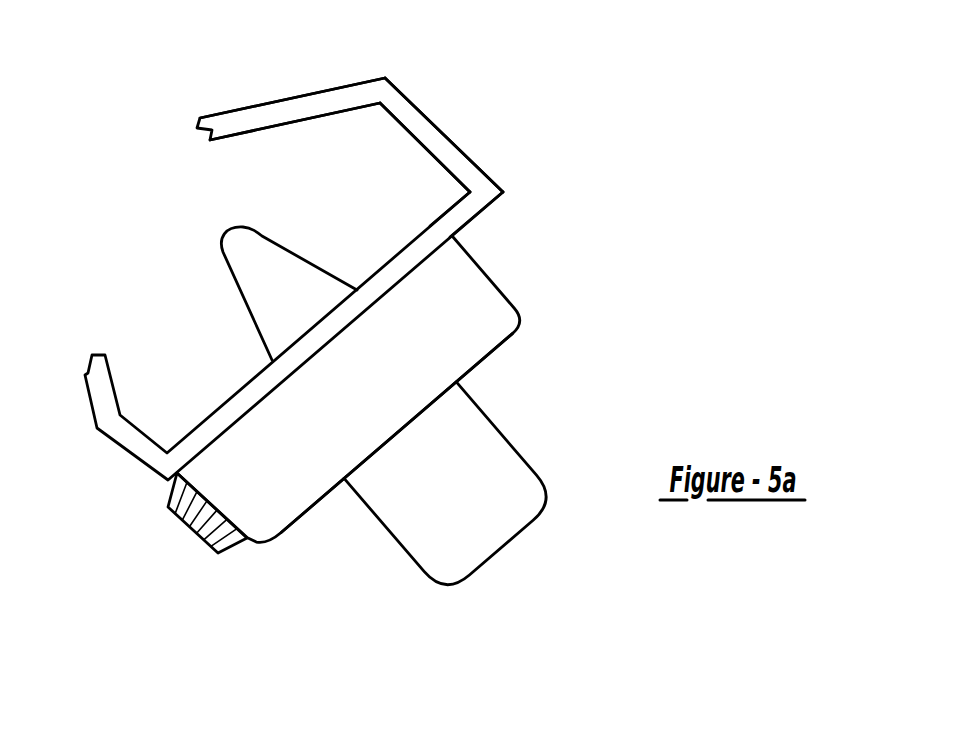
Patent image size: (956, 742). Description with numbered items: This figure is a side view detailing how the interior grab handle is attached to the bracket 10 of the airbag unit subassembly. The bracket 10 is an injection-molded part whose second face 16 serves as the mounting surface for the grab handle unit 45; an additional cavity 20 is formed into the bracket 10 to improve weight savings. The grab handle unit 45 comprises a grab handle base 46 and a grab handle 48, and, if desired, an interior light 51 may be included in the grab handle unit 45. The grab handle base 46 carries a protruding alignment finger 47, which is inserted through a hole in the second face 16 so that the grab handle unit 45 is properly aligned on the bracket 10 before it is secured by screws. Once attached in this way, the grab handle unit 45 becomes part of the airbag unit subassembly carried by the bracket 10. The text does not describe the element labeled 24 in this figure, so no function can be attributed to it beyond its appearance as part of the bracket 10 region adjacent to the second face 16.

The bracket 10 is at (457, 117).
The additional cavity 20 is at (312, 201).
The upper flange 24 is at (273, 103).
The second face 16 is at (477, 212).
The grab handle unit 45 is at (522, 393).
The grab handle base 46 is at (310, 448).
The protruding alignment finger 47 is at (268, 285).
The grab handle 48 is at (435, 503).
The interior light 51 is at (197, 533).